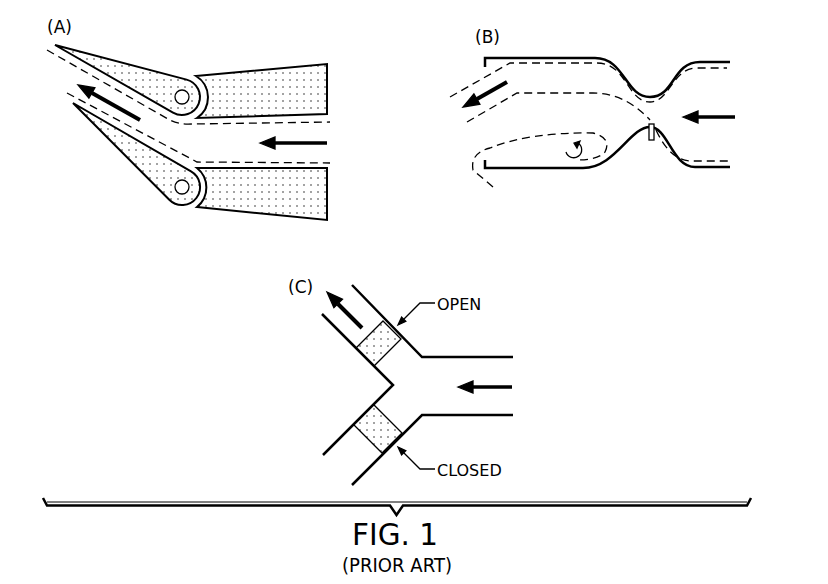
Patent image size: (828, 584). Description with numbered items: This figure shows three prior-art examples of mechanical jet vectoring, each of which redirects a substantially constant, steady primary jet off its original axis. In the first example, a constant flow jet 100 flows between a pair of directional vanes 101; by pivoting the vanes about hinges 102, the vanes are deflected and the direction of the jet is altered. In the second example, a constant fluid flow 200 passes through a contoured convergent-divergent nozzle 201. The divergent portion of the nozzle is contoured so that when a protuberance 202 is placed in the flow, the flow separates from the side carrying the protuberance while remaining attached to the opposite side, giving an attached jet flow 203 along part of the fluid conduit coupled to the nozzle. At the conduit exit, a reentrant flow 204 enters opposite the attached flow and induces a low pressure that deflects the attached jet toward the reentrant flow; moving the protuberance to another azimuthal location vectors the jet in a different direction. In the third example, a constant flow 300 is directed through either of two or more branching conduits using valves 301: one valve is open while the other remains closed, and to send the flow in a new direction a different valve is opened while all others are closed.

The constant flow jet 100 is at (321, 138).
The directional vanes 101 is at (140, 73).
The hinges 102 is at (182, 97).
The constant fluid flow 200 is at (727, 110).
The contoured convergent-divergent nozzle 201 is at (703, 60).
The protuberance 202 is at (653, 142).
The attached jet flow 203 is at (570, 72).
The reentrant flow 204 is at (505, 188).
The constant flow 300 is at (502, 378).
The valves 301 is at (370, 355).